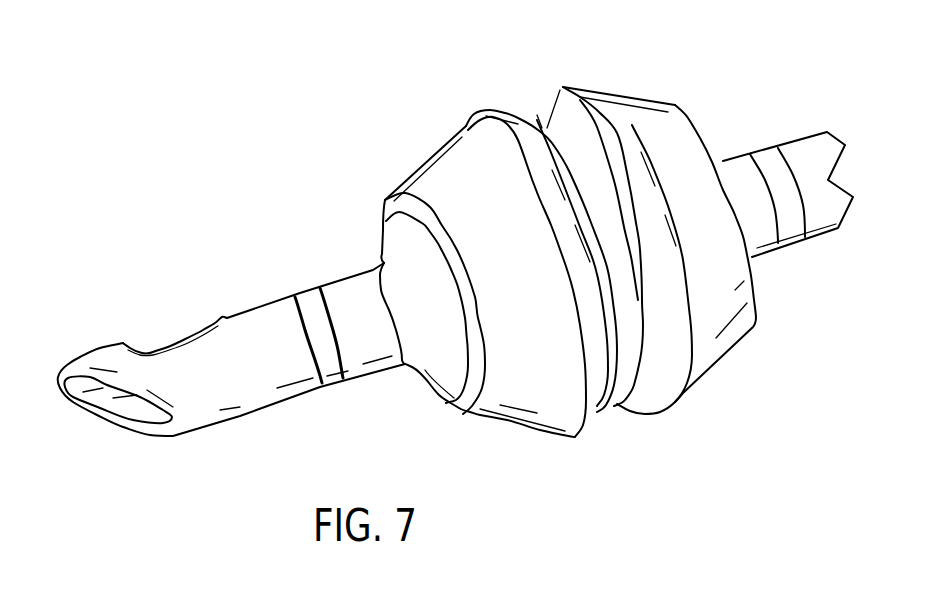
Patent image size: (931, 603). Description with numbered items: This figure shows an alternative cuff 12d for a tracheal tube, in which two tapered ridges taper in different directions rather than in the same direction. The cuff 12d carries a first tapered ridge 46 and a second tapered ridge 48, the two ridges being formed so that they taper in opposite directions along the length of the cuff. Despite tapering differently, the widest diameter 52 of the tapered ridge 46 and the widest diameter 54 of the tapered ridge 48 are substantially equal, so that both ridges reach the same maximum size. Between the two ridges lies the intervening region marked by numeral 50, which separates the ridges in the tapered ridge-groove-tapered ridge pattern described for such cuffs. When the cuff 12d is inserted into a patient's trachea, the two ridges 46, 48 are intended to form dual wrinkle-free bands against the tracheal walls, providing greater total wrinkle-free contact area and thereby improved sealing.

The cuff 12d is at (347, 44).
The tapered ridge 46 is at (728, 346).
The tapered ridge 48 is at (542, 430).
The groove 50 is at (537, 115).
The widest diameter 52 is at (563, 86).
The widest diameter 54 is at (466, 124).